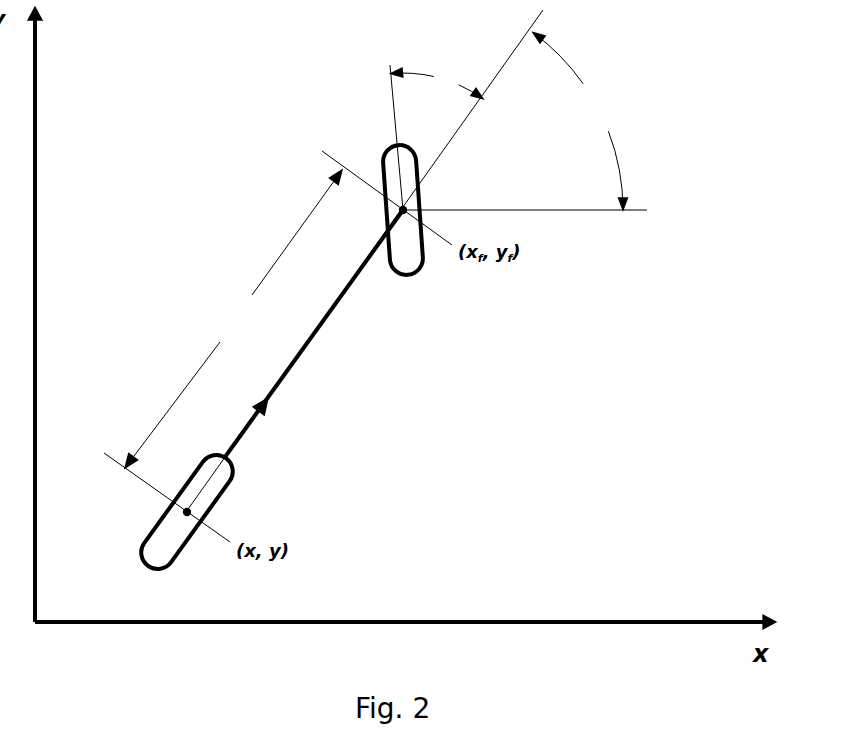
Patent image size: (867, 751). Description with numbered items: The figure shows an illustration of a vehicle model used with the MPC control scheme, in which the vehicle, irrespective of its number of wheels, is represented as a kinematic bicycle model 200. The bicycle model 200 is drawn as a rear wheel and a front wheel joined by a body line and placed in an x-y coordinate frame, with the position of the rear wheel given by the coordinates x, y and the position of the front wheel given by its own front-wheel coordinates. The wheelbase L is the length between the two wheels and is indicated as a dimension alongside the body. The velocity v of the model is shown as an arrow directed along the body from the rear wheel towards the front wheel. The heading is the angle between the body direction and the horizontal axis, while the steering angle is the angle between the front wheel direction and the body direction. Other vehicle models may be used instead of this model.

The kinematic bicycle model 200 is at (420, 393).
The wheelbase L is at (278, 346).
The velocity v is at (268, 415).